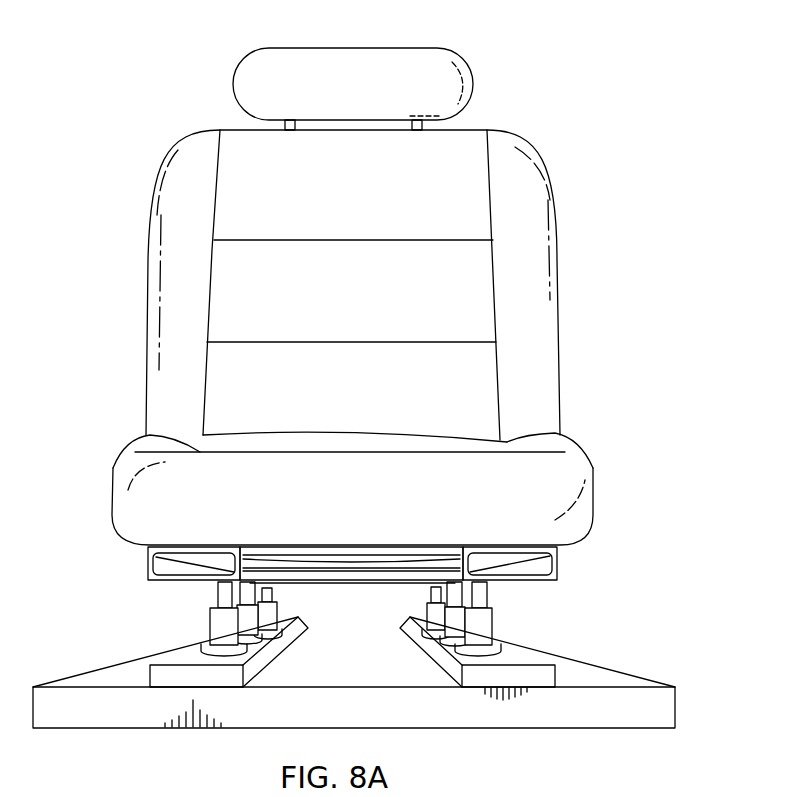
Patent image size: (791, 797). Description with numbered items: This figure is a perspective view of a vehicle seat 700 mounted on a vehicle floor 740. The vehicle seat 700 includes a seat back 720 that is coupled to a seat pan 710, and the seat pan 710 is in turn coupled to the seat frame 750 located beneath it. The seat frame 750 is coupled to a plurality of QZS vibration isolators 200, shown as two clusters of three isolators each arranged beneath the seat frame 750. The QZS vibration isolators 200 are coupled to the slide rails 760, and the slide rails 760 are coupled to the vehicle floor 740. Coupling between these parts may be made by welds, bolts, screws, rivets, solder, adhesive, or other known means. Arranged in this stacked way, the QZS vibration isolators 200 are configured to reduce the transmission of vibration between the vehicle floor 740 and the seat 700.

The vehicle seat 700 is at (144, 88).
The seat back 720 is at (558, 207).
The seat pan 710 is at (327, 430).
The seat frame 750 is at (345, 553).
The QZS vibration isolator 200 is at (248, 620).
The slide rail 760 is at (148, 676).
The vehicle floor 740 is at (674, 706).